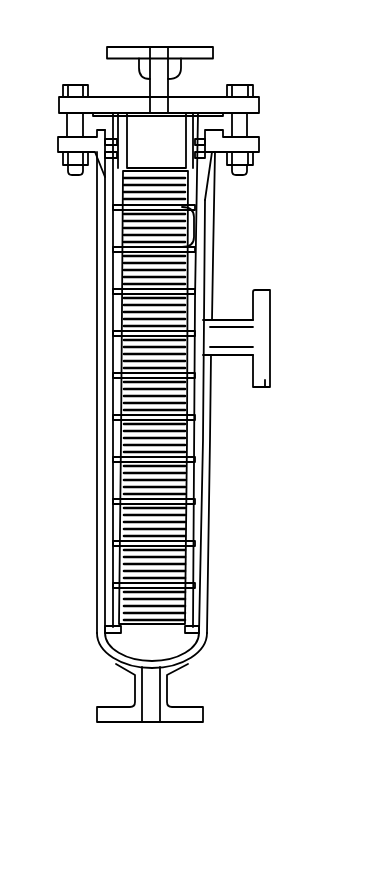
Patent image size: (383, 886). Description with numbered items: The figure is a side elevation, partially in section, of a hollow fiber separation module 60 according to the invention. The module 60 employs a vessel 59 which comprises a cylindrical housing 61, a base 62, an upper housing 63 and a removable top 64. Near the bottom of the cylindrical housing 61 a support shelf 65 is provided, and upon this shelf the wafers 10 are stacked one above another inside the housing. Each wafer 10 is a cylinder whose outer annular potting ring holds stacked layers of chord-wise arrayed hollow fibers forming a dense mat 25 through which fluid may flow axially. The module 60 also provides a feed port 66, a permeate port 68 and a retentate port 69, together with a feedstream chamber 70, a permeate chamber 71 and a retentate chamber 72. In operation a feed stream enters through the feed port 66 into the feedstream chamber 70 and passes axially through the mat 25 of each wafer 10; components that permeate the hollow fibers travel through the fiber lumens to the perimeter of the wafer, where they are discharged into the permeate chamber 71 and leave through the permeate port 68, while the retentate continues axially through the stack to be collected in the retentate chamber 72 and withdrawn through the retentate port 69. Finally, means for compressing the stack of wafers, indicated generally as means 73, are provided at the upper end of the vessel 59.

The wafer 10 is at (190, 494).
The dense mat 25 is at (195, 228).
The vessel 59 is at (86, 467).
The module 60 is at (75, 523).
The cylindrical housing 61 is at (97, 362).
The base 62 is at (100, 650).
The upper housing 63 is at (210, 155).
The removable top 64 is at (203, 100).
The support shelf 65 is at (112, 655).
The feed port 66 is at (199, 53).
The permeate port 68 is at (262, 387).
The retentate port 69 is at (195, 713).
The feedstream chamber 70 is at (145, 125).
The permeate chamber 71 is at (108, 257).
The retentate chamber 72 is at (173, 640).
The means for compressing the stack of wafers 73 is at (260, 116).